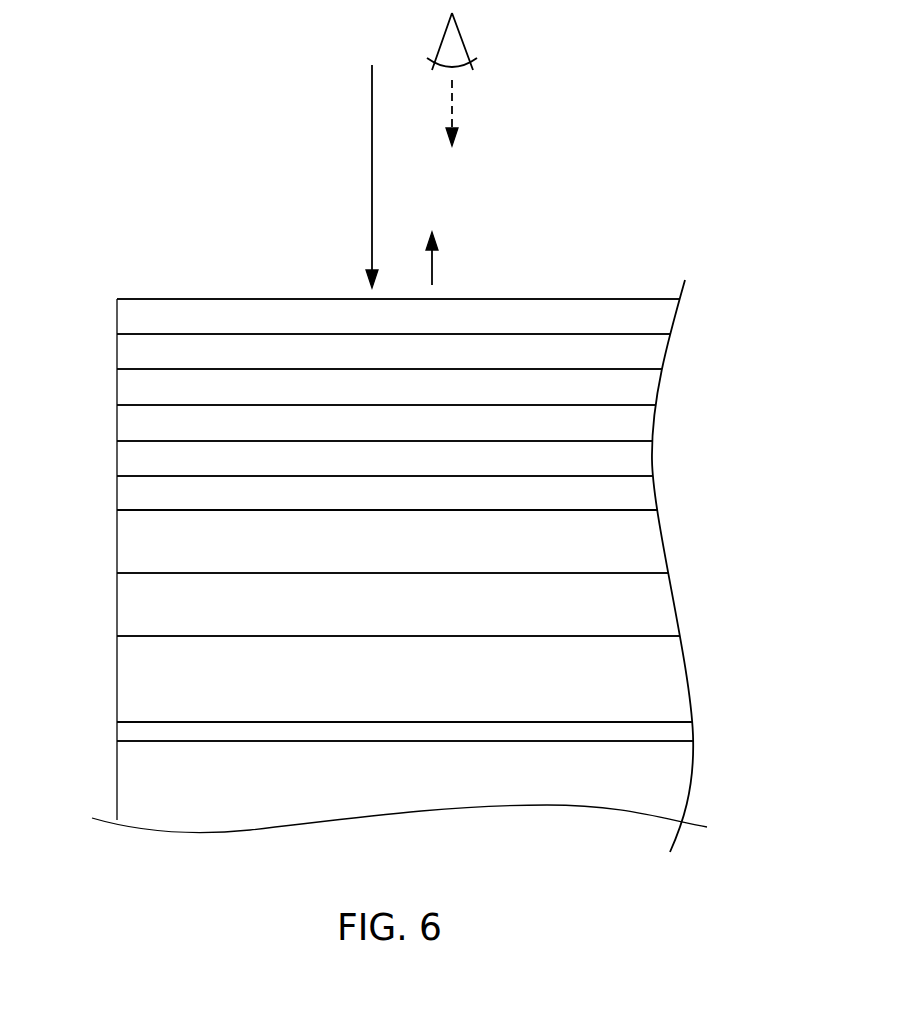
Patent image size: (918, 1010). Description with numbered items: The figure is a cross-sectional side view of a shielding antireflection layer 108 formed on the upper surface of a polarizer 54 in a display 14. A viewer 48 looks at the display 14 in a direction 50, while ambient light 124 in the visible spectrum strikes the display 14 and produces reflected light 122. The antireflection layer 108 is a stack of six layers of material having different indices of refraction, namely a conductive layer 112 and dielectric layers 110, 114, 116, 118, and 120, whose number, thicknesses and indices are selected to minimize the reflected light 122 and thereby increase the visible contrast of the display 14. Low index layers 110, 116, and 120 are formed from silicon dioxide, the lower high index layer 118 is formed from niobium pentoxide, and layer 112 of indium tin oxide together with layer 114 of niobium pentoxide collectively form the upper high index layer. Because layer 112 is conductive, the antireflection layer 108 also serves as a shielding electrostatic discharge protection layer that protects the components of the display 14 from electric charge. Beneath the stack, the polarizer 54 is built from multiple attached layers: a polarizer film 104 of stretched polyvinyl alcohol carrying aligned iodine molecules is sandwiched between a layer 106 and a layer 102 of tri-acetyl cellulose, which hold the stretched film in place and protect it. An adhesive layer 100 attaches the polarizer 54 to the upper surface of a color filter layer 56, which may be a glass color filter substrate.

The display 14 is at (693, 173).
The viewer 48 is at (463, 40).
The direction 50 is at (452, 115).
The polarizer 54 is at (705, 513).
The color filter layer 56 is at (682, 780).
The adhesive layer 100 is at (680, 734).
The layer 102 is at (128, 674).
The polarizer film 104 is at (128, 603).
The layer 106 is at (128, 545).
The antireflection layer 108 is at (102, 298).
The low index layer 110 is at (667, 318).
The conductive layer 112 is at (657, 354).
The dielectric layer 114 is at (651, 389).
The low index layer 116 is at (647, 424).
The lower high index layer 118 is at (646, 459).
The low index layer 120 is at (646, 492).
The reflected light 122 is at (432, 262).
The ambient light 124 is at (372, 200).